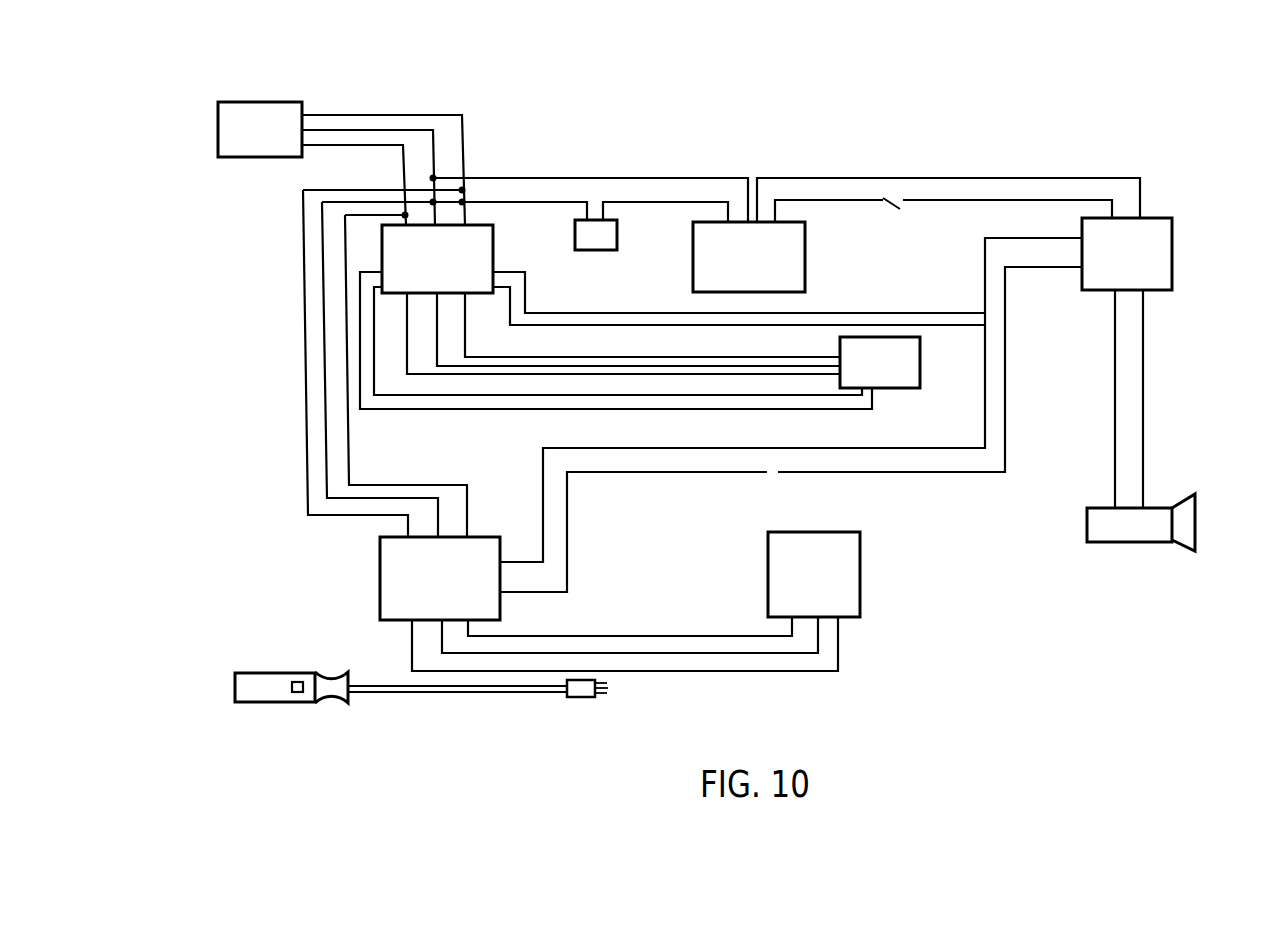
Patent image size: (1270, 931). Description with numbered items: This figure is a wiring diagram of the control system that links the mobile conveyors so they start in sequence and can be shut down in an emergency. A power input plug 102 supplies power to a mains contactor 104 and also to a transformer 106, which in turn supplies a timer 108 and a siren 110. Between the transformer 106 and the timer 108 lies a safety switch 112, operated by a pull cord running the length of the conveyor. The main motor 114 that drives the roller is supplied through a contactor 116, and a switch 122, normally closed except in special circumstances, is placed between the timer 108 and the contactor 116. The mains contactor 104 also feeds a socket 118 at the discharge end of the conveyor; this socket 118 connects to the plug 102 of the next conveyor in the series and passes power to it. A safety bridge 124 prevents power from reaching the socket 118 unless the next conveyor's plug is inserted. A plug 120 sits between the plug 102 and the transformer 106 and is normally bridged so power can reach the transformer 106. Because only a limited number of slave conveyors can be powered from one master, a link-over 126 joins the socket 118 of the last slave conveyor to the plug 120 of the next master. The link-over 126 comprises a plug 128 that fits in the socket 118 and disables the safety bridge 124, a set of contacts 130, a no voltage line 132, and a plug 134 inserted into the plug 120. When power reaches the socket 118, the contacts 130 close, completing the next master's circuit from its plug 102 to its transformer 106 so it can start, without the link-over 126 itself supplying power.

The power input plug 102 is at (278, 73).
The mains contactor 104 is at (505, 224).
The transformer 106 is at (806, 226).
The timer 108 is at (1172, 242).
The siren 110 is at (1193, 510).
The safety switch 112 is at (893, 200).
The main motor 114 is at (860, 562).
The contactor 116 is at (380, 593).
The socket 118 is at (921, 362).
The plug 120 is at (608, 233).
The switch 122 is at (787, 483).
The safety bridge 124 is at (483, 410).
The link-over 126 is at (500, 693).
The plug 128 is at (265, 703).
The set of contacts 130 is at (296, 682).
The no voltage line 132 is at (387, 698).
The plug 134 is at (570, 698).